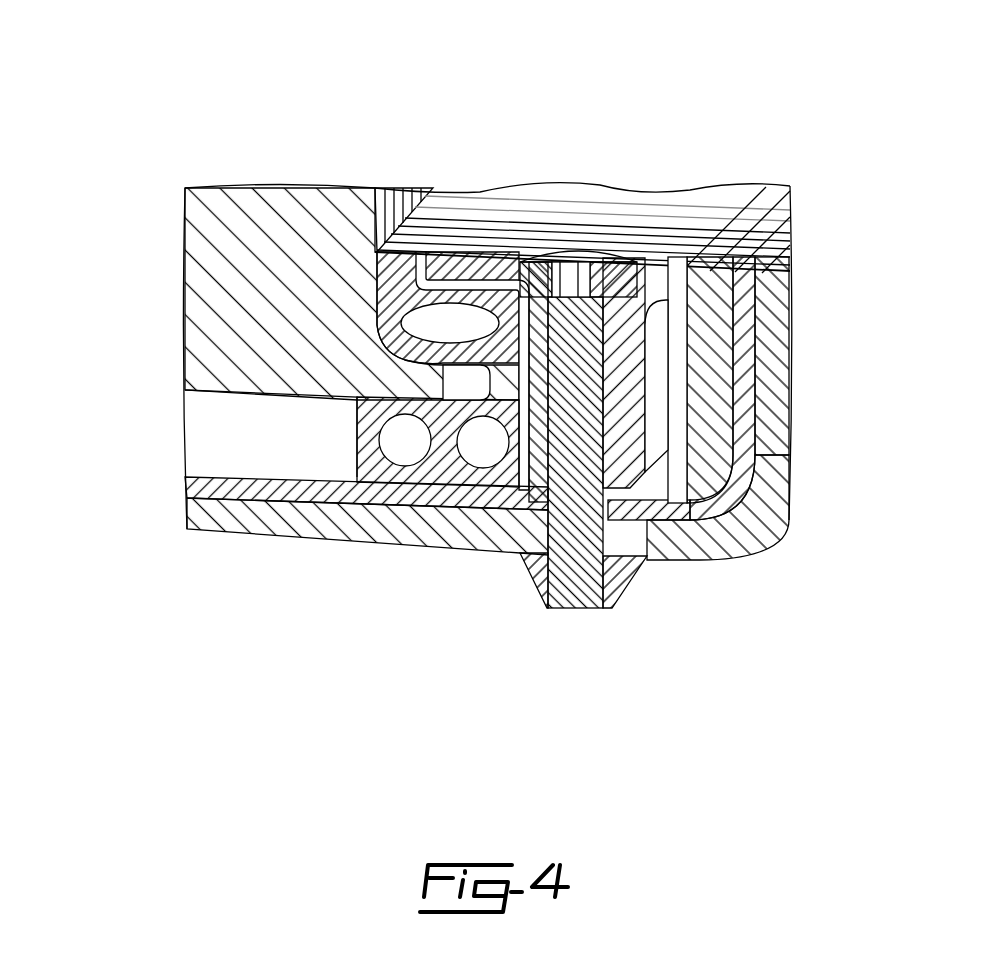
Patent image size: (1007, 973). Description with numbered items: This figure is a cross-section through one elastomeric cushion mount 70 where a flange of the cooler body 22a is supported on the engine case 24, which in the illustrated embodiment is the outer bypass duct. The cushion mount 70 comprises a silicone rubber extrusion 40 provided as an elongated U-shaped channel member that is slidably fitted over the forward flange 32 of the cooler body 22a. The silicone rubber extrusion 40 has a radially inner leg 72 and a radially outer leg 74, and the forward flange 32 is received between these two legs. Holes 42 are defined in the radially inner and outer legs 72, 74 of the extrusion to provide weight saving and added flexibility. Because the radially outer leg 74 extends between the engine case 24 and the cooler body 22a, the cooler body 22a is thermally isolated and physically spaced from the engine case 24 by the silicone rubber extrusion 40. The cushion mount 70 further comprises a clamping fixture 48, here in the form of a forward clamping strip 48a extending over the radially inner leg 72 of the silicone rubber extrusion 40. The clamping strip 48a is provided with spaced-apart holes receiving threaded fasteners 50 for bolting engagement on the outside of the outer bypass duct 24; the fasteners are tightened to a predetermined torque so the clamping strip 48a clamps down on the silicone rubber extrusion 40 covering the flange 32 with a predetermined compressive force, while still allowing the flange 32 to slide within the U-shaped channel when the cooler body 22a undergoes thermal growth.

The cooler body 22a is at (312, 302).
The engine case 24 is at (287, 529).
The forward flange 32 is at (450, 378).
The silicone rubber extrusion 40 is at (503, 470).
The holes 42 is at (457, 320).
The clamping fixture 48 is at (587, 147).
The forward clamping strip 48a is at (667, 220).
The threaded fastener 50 is at (594, 523).
The cushion mount 70 is at (376, 278).
The radially inner leg 72 is at (418, 295).
The radially outer leg 74 is at (410, 453).